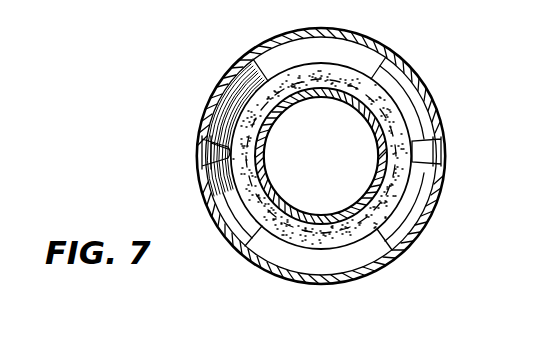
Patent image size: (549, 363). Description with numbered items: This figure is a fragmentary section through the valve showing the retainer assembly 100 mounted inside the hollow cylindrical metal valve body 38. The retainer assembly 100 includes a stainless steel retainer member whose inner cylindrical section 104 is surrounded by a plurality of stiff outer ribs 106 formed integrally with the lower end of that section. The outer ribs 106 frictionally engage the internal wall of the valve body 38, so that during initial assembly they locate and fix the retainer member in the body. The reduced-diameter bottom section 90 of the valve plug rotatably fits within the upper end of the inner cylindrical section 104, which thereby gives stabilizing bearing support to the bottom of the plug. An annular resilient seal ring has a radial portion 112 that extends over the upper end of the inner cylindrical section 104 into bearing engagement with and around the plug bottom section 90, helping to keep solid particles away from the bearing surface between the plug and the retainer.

The valve body 38 is at (281, 33).
The bottom section 90 is at (268, 130).
The retainer assembly 100 is at (292, 254).
The inner cylindrical section 104 is at (340, 78).
The outer ribs 106 is at (205, 178).
The radial portion 112 is at (307, 66).